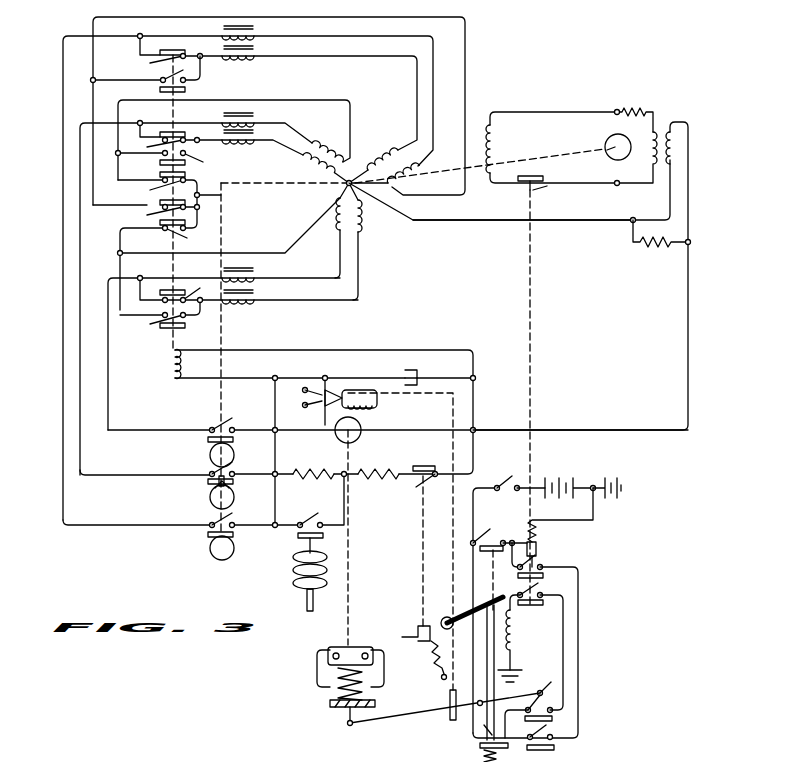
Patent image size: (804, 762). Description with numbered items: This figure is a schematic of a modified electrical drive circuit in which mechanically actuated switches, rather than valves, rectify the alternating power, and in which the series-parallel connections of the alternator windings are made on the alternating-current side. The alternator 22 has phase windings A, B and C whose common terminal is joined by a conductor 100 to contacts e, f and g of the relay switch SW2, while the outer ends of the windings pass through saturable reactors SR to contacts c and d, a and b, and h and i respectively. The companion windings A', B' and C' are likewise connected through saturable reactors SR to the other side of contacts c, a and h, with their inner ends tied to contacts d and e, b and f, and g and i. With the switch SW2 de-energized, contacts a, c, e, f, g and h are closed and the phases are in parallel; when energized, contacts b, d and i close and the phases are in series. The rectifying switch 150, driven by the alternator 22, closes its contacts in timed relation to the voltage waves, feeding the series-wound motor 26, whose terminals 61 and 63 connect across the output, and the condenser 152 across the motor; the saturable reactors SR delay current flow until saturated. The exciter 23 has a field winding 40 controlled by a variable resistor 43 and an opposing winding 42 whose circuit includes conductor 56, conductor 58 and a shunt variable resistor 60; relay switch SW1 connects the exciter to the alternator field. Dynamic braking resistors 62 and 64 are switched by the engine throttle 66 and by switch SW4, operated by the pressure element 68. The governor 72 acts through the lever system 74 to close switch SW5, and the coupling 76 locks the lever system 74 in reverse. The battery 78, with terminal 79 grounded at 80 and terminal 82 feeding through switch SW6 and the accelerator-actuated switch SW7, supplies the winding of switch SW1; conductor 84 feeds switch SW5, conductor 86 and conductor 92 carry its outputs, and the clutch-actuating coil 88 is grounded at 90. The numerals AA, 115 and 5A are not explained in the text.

The saturable reactor SR is at (256, 28).
The contacts a is at (154, 62).
The contacts b is at (146, 74).
The contacts c is at (165, 138).
The contacts d is at (164, 164).
The contacts e is at (168, 193).
The contacts f is at (166, 214).
The contacts g is at (180, 234).
The contacts h is at (173, 289).
The contacts i is at (152, 294).
The relay switch SW2 is at (286, 251).
The phase winding A is at (317, 167).
The phase winding A' is at (328, 141).
The phase winding B is at (373, 158).
The phase winding B' is at (390, 178).
The phase winding C is at (368, 241).
The phase winding C' is at (329, 230).
The conductor 100 is at (285, 200).
The alternator 22 is at (421, 224).
The coil AA is at (499, 143).
The variable resistor 43 is at (633, 108).
The exciter 23 is at (653, 97).
The field winding 40 is at (633, 156).
The field winding 42 is at (677, 146).
The conductor 58 is at (553, 222).
The variable current-controlling resistor 60 is at (660, 247).
The relay switch SW1 is at (532, 295).
The motor terminal 63 is at (277, 381).
The condenser 152 is at (421, 374).
The relay 115 is at (304, 393).
The motor 26 is at (362, 428).
The conductor 5A is at (277, 433).
The motor terminal 61 is at (475, 428).
The conductor 56 is at (548, 428).
The dynamic braking resistor 62 is at (312, 472).
The dynamic braking resistor 64 is at (377, 472).
The coupling 76 is at (446, 405).
The switch SW4 is at (325, 548).
The pressure element 68 is at (327, 578).
The switch SW5 is at (423, 541).
The rectifying switch 150 is at (210, 545).
The governor 72 is at (322, 680).
The lever system 74 is at (430, 712).
The engine throttle 66 is at (444, 617).
The conductor 84 is at (474, 515).
The switch SW6 is at (497, 485).
The battery terminal 82 is at (541, 479).
The battery 78 is at (566, 480).
The battery terminal 79 is at (594, 486).
The ground 80 is at (622, 488).
The conductor 92 is at (578, 629).
The accelerator-actuated switch SW7 is at (520, 592).
The clutch-actuating coil 88 is at (518, 633).
The conductor 86 is at (563, 647).
The ground 90 is at (512, 673).